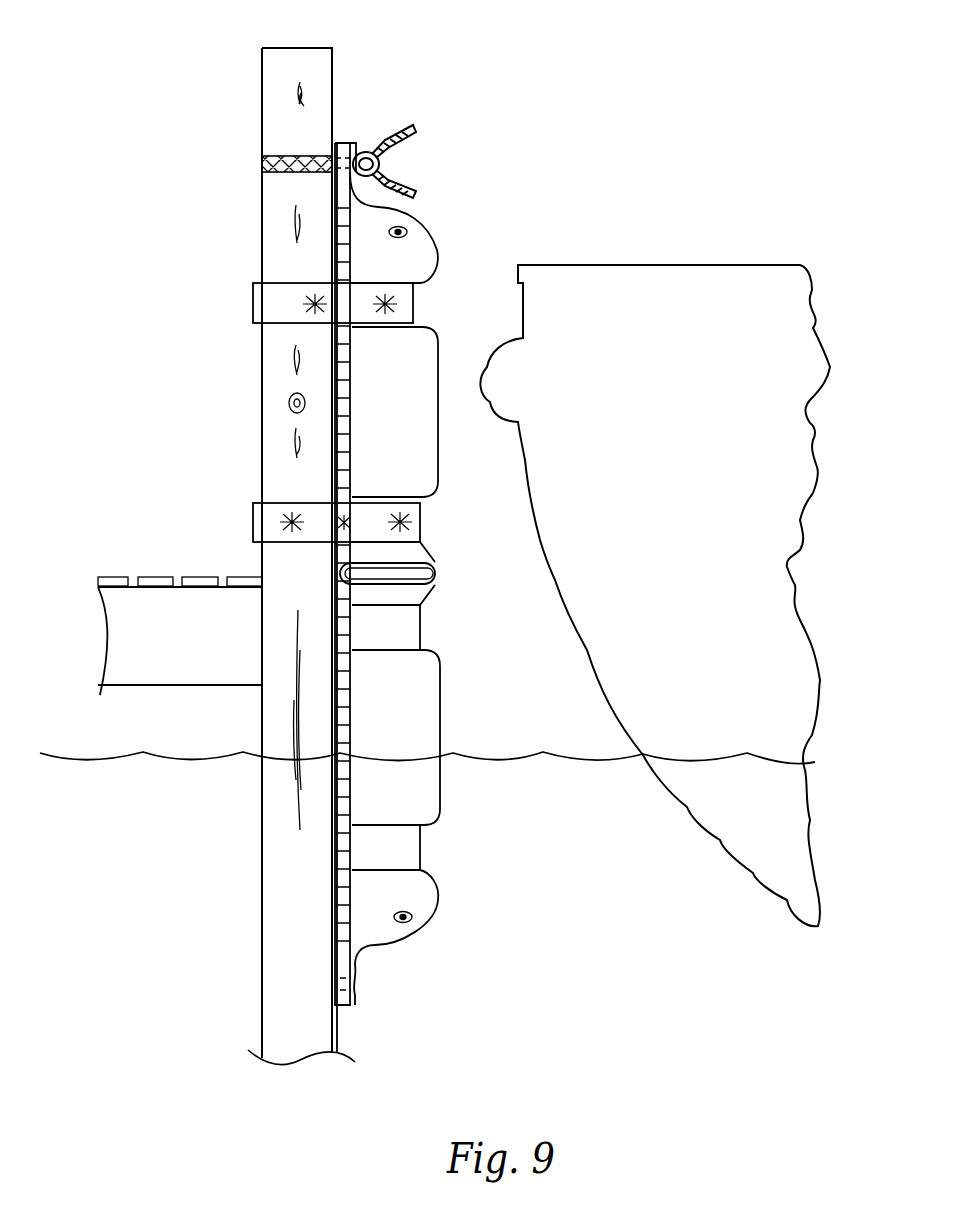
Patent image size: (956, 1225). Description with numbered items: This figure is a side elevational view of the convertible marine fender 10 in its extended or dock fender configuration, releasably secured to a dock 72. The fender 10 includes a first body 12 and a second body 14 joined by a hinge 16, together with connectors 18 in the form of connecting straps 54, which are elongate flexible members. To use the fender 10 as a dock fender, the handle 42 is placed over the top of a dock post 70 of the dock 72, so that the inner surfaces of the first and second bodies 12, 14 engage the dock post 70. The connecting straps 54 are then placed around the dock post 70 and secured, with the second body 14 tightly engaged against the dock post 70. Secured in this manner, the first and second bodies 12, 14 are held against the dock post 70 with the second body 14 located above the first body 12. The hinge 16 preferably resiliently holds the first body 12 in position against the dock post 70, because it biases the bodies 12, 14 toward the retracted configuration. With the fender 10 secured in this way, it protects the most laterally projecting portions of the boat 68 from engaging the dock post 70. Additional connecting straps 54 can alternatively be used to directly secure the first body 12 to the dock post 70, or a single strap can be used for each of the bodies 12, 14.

The convertible marine fender 10 is at (432, 238).
The first body 12 is at (442, 718).
The second body 14 is at (438, 437).
The hinge 16 is at (440, 572).
The connectors 18 is at (294, 281).
The handle 42 is at (262, 163).
The connecting straps 54 is at (278, 283).
The boat 68 is at (622, 262).
The dock post 70 is at (258, 72).
The dock 72 is at (152, 574).